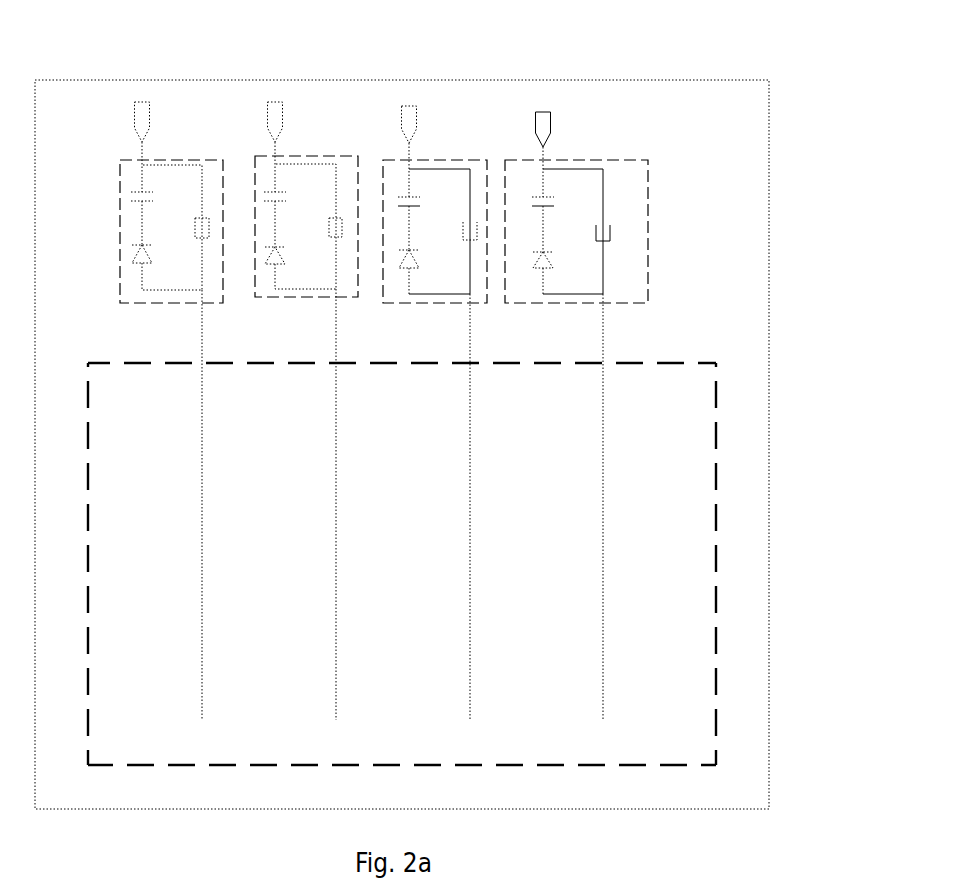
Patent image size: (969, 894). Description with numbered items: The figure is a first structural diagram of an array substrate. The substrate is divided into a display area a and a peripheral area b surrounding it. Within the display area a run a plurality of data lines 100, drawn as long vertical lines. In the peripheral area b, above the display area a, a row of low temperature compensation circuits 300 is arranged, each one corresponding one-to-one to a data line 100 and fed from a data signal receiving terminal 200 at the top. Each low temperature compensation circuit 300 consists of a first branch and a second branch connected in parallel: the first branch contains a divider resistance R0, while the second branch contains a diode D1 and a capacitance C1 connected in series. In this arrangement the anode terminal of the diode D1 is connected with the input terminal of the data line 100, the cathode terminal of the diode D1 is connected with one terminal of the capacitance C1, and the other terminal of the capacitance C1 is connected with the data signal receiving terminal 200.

The data line 100 is at (607, 598).
The data signal receiving terminal 200 is at (547, 115).
The low temperature compensation circuit 300 is at (663, 193).
The display area a is at (695, 463).
The peripheral area b is at (647, 122).
The capacitance C1 is at (531, 195).
The diode D1 is at (531, 262).
The divider resistance R0 is at (617, 235).